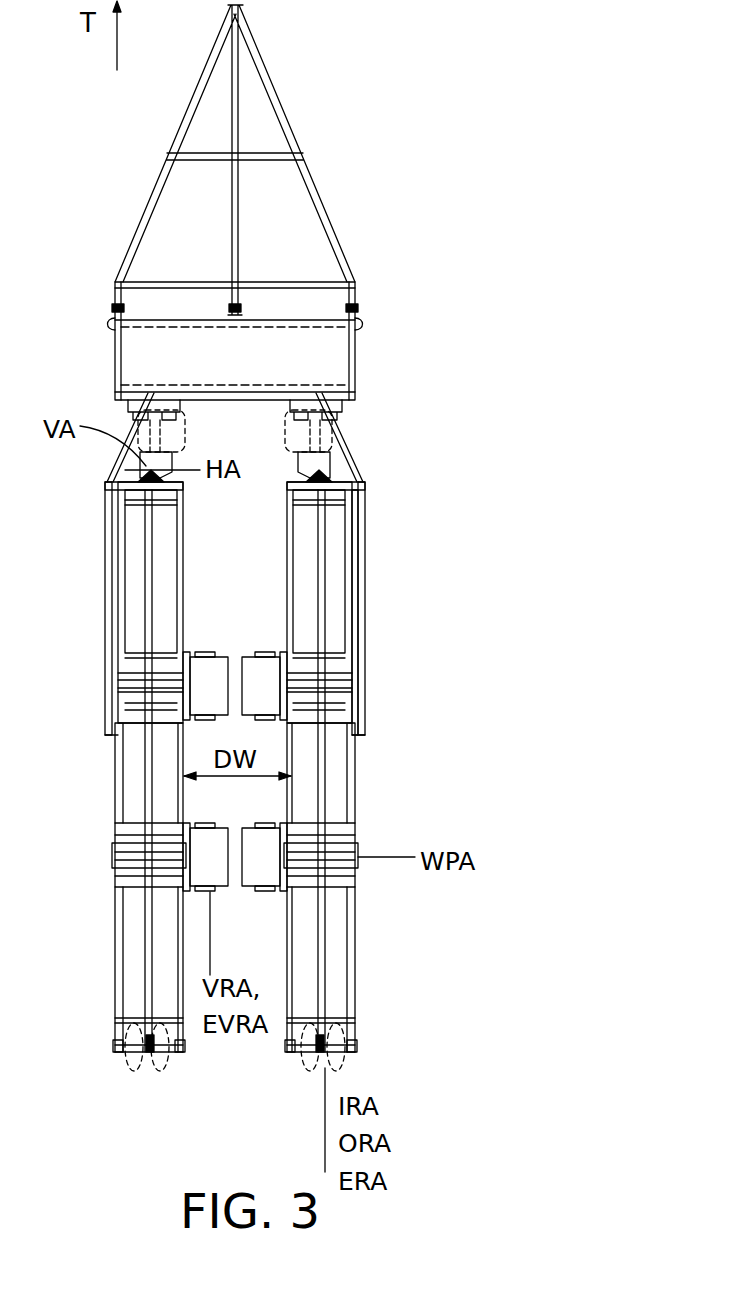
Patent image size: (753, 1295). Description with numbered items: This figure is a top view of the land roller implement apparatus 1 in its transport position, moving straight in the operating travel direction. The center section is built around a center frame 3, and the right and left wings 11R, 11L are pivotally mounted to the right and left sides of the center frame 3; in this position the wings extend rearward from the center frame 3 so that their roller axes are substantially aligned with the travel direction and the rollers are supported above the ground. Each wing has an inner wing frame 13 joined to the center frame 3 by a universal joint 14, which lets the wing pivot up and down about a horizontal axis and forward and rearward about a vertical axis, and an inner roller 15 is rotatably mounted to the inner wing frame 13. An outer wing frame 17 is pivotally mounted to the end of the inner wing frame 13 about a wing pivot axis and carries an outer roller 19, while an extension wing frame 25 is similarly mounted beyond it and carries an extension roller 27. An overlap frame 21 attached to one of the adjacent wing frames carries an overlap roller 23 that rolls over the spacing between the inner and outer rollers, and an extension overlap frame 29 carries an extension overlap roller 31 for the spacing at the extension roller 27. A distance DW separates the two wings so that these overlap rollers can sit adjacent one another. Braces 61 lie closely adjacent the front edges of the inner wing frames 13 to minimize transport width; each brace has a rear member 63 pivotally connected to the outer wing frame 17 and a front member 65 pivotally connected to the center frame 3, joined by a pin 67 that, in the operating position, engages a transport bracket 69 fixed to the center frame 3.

The land roller implement apparatus 1 is at (519, 422).
The center frame 3 is at (355, 294).
The transport bracket 69 is at (360, 323).
The front member 65 is at (350, 444).
The pin 67 is at (355, 480).
The braces 61 is at (365, 512).
The rear member 63 is at (365, 575).
The universal joint 14 is at (120, 466).
The inner roller 15 is at (130, 577).
The inner wing frame 13 is at (110, 624).
The outer roller 19 is at (130, 782).
The outer wing frame 17 is at (115, 828).
The extension roller 27 is at (130, 937).
The extension wing frame 25 is at (112, 975).
The left wing 11L is at (115, 1032).
The right wing 11R is at (358, 1040).
The overlap roller 23 is at (220, 668).
The overlap frame 21 is at (258, 668).
The extension overlap roller 31 is at (208, 862).
The extension overlap frame 29 is at (280, 918).